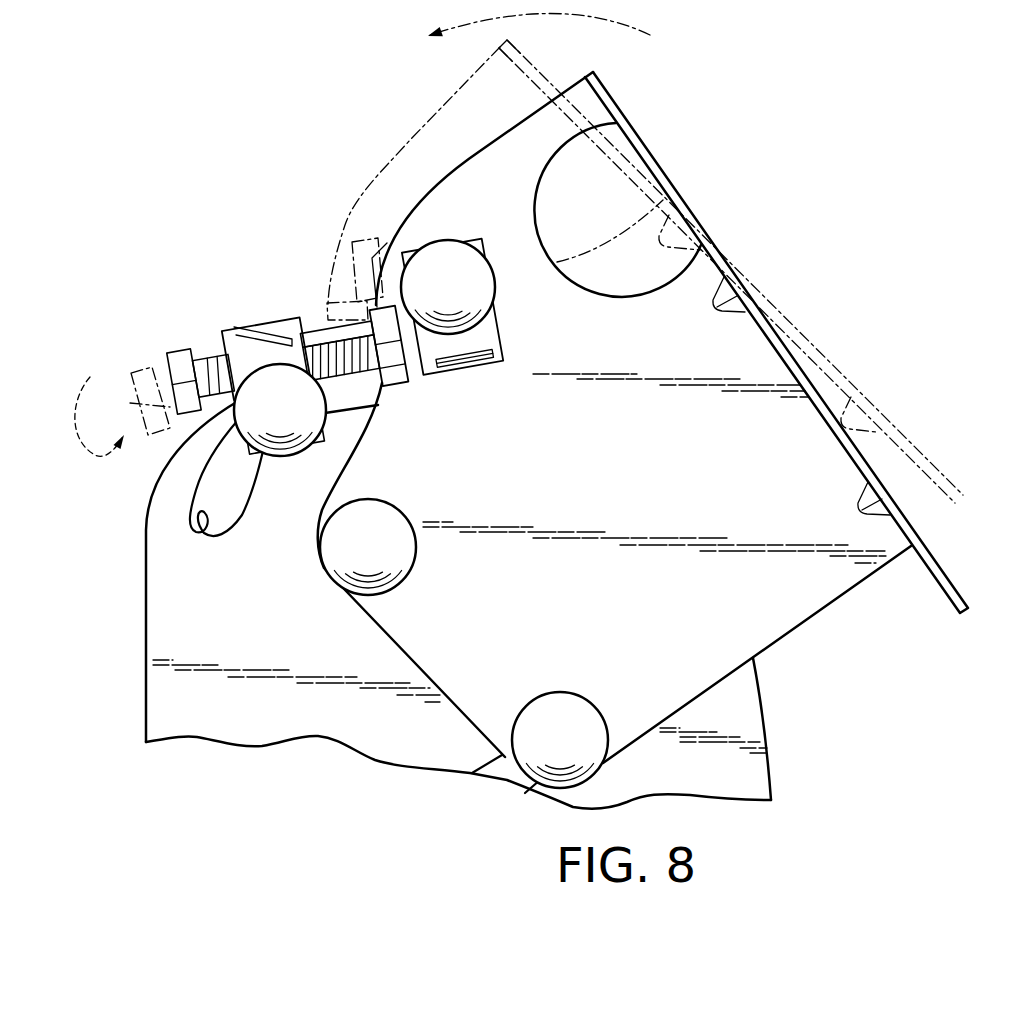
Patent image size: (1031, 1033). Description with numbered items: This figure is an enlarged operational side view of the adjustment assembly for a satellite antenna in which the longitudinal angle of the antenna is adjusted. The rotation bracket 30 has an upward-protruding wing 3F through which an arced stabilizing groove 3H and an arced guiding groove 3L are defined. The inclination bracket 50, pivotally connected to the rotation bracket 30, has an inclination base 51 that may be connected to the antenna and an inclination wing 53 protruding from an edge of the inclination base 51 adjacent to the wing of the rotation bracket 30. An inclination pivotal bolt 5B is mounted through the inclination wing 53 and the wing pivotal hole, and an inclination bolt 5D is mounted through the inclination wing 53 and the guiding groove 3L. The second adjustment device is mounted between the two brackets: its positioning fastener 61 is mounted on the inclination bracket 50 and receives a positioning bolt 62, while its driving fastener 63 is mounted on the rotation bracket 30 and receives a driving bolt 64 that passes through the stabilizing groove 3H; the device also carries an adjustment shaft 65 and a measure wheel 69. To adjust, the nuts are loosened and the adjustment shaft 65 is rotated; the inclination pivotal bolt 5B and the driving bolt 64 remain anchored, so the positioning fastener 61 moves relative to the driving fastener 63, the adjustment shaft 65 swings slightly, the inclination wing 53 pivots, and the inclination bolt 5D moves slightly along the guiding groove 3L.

The rotation bracket 30 is at (408, 613).
The wing 3F is at (197, 727).
The stabilizing groove 3H is at (198, 524).
The guiding groove 3L is at (493, 765).
The inclination pivotal bolt 5B is at (352, 547).
The inclination bolt 5D is at (553, 706).
The inclination bracket 50 is at (671, 420).
The inclination base 51 is at (953, 588).
The inclination wing 53 is at (828, 590).
The positioning fastener 61 is at (461, 348).
The positioning bolt 62 is at (481, 317).
The driving fastener 63 is at (232, 342).
The driving bolt 64 is at (280, 423).
The adjustment shaft 65 is at (180, 365).
The measure wheel 69 is at (397, 375).